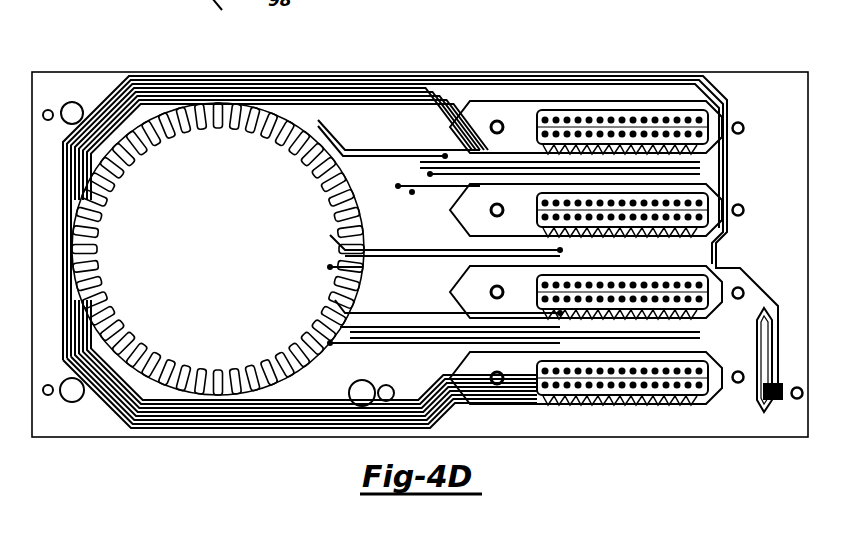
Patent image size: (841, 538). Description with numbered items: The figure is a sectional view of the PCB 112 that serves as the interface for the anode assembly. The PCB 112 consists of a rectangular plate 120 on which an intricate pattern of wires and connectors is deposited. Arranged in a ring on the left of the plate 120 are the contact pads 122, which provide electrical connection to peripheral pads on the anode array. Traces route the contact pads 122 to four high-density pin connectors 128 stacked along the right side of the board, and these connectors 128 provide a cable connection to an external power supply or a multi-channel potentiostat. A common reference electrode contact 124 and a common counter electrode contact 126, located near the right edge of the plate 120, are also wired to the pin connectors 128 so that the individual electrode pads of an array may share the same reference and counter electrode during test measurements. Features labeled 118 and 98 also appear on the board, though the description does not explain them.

The PCB 112 is at (127, 42).
The rectangular plate 120 is at (795, 108).
The contact pads 122 is at (92, 250).
The high-density pin connectors 128 is at (625, 112).
The common counter electrode contact 126 is at (797, 385).
The common reference electrode contact 124 is at (779, 402).
The small hole 118 is at (48, 396).
The mounting hole 98 is at (80, 400).